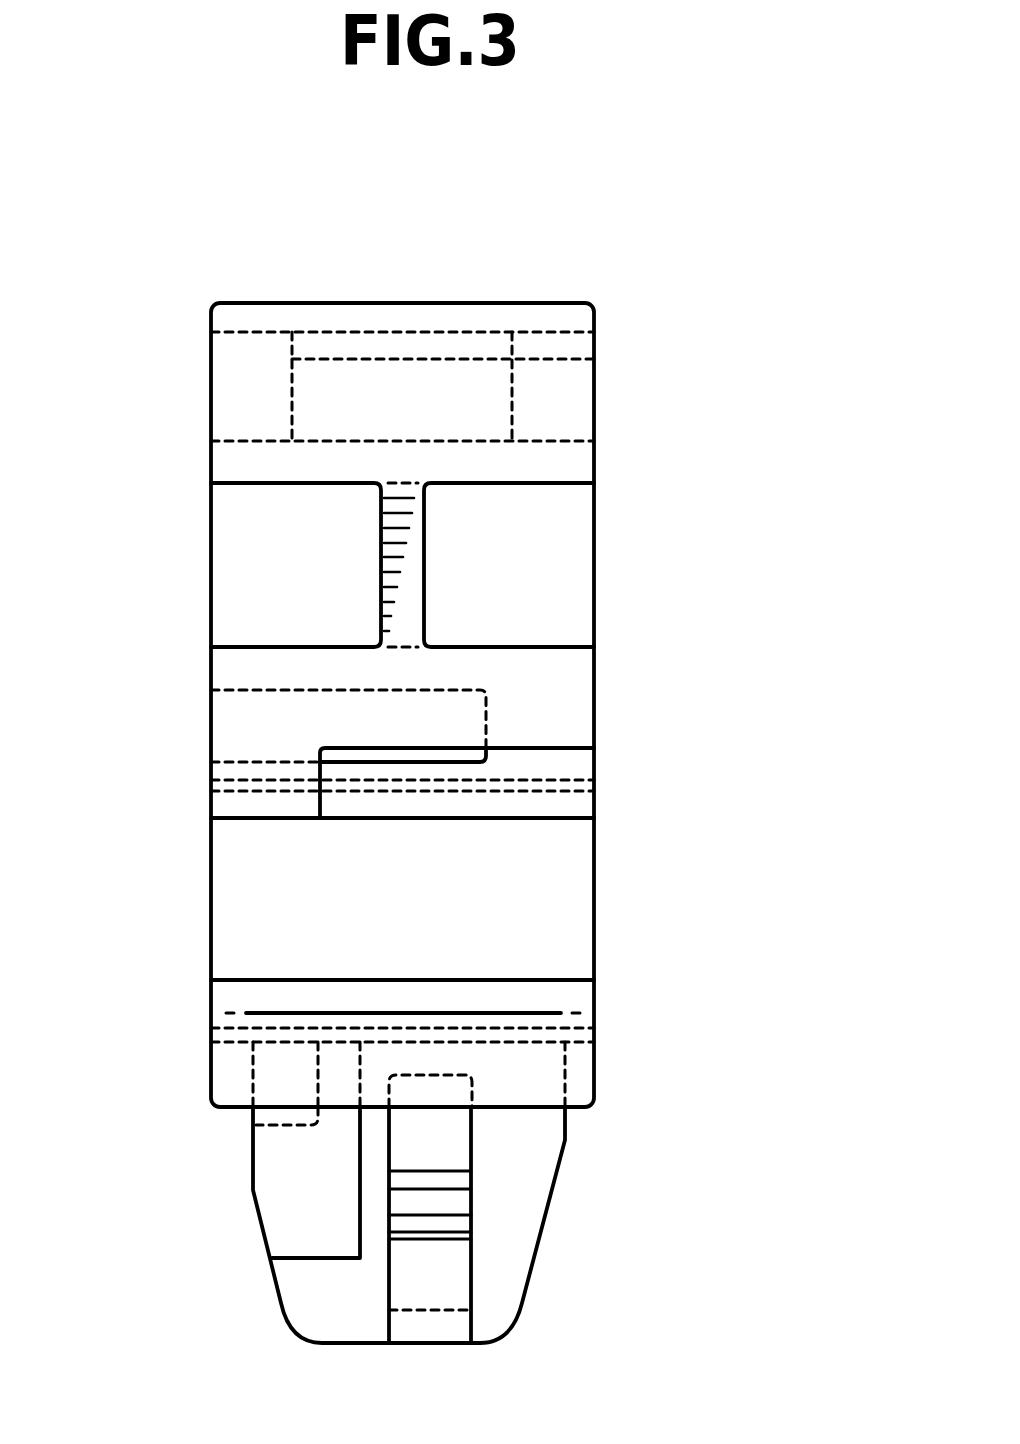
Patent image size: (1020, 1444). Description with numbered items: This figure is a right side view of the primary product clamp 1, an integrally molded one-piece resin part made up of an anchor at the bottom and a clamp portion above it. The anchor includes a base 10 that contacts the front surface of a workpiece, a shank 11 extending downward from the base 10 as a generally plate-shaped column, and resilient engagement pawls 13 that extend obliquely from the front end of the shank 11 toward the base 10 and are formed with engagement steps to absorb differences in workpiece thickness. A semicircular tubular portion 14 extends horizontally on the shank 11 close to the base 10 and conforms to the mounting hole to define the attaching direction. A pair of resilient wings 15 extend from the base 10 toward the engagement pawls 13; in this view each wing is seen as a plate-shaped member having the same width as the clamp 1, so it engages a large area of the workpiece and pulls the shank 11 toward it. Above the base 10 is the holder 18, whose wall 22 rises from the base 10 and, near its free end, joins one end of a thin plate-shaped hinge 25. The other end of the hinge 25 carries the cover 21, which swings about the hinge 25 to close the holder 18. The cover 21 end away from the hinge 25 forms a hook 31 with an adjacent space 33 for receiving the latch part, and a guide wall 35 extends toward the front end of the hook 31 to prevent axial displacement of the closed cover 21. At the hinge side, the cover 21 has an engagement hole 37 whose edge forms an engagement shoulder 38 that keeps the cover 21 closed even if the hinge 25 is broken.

The primary product clamp 1 is at (713, 455).
The base 10 is at (503, 1020).
The shank 11 is at (518, 1163).
The engagement pawls 13 is at (450, 1203).
The semicircular tubular portion 14 is at (290, 1155).
The resilient wings 15 is at (233, 1071).
The holder 18 is at (208, 856).
The cover 21 is at (207, 582).
The wall 22 is at (275, 928).
The hinge 25 is at (270, 790).
The hook 31 is at (438, 370).
The space 33 is at (362, 393).
The guide wall 35 is at (211, 387).
The engagement hole 37 is at (405, 762).
The engagement shoulder 38 is at (441, 802).